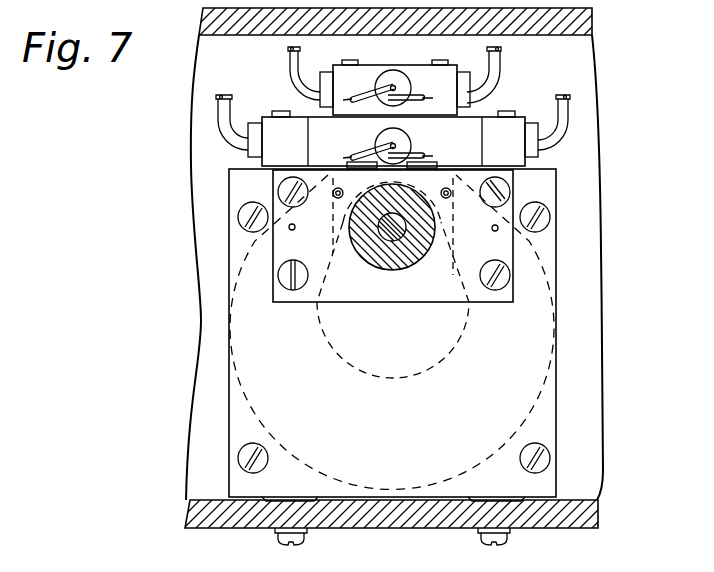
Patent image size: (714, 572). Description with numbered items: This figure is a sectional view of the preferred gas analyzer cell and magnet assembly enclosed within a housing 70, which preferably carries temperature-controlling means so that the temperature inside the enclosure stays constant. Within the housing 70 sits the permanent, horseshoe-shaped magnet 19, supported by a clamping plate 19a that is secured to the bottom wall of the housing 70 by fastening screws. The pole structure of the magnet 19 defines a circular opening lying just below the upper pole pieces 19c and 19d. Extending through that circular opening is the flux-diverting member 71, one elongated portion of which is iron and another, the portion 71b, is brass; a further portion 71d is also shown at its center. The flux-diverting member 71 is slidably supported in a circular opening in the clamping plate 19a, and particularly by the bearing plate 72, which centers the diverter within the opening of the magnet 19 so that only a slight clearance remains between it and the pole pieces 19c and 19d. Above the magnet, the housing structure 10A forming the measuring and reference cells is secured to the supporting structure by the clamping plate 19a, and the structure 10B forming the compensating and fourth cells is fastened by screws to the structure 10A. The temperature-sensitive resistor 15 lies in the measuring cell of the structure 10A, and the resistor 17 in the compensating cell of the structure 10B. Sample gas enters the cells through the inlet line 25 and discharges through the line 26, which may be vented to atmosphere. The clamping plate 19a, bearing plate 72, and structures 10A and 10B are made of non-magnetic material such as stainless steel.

The housing 70 is at (600, 518).
The permanent magnet 19 is at (530, 357).
The clamping plate 19a is at (238, 421).
The upper pole piece 19c is at (358, 178).
The upper pole piece 19d is at (428, 180).
The flux-diverting member 71 is at (393, 274).
The brass portion of flux-diverting member 71b is at (362, 231).
The shaft 71d is at (400, 229).
The bearing plate 72 is at (296, 304).
The housing structure 10A is at (389, 173).
The cell structure 10B is at (394, 76).
The temperature-sensitive resistor 15 is at (378, 137).
The temperature-sensitive resistor 17 is at (388, 74).
The inlet line 25 is at (567, 103).
The discharge line 26 is at (218, 106).